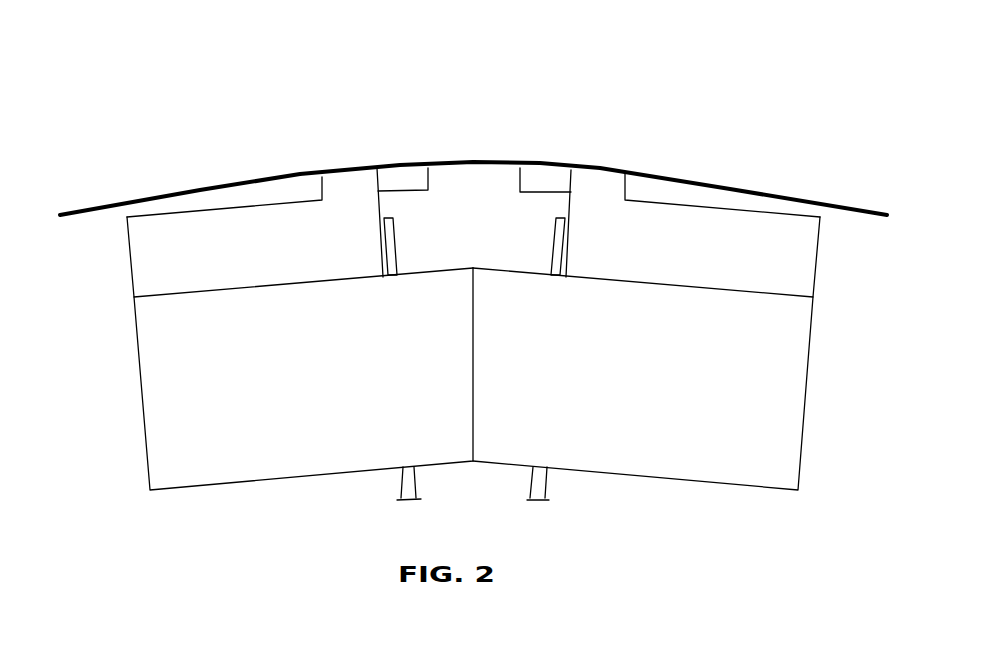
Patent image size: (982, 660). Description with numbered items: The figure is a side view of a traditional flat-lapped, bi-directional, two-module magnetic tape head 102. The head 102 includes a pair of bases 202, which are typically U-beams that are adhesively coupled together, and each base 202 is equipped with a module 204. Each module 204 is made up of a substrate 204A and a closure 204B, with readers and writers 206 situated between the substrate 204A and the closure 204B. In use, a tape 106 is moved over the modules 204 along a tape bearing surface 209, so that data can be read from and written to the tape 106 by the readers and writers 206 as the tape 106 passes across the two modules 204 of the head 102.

The tape head 102 is at (236, 126).
The tape 106 is at (815, 202).
The base 202 is at (140, 368).
The module 204 is at (130, 265).
The substrate 204A is at (195, 240).
The closure 204B is at (517, 181).
The readers and writers 206 is at (375, 156).
The tape bearing surface 209 is at (603, 156).